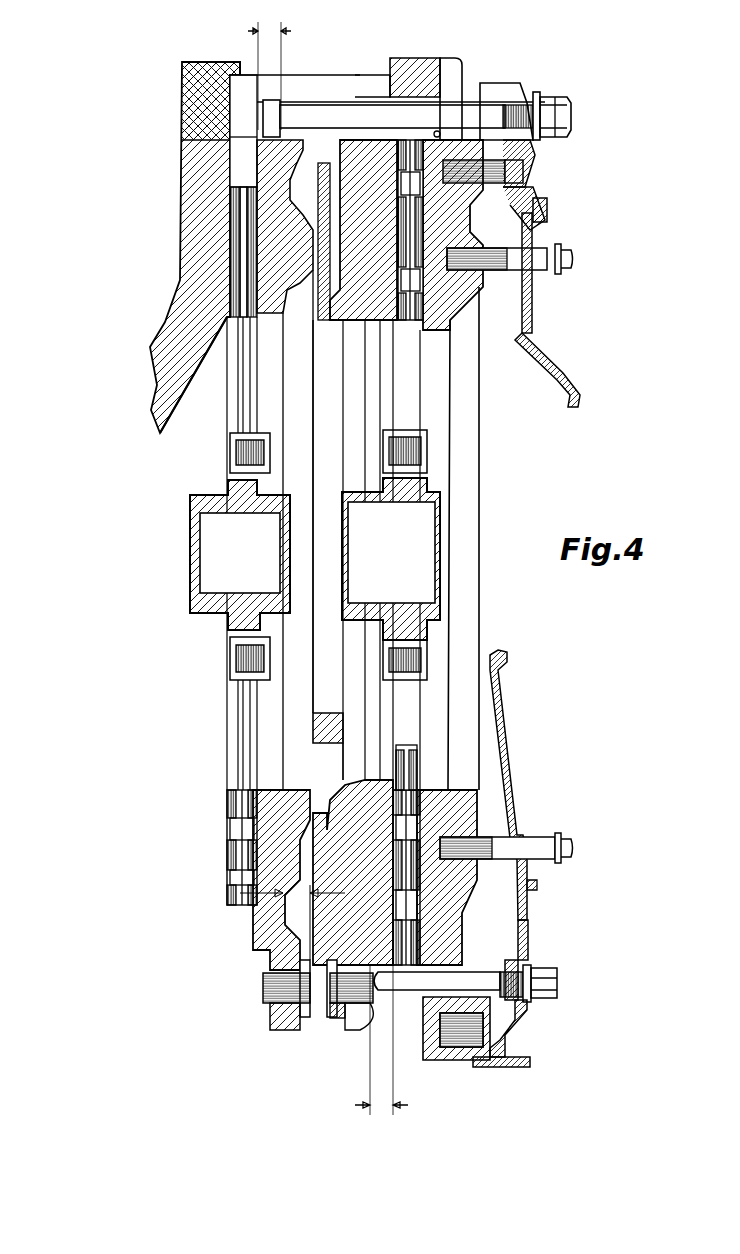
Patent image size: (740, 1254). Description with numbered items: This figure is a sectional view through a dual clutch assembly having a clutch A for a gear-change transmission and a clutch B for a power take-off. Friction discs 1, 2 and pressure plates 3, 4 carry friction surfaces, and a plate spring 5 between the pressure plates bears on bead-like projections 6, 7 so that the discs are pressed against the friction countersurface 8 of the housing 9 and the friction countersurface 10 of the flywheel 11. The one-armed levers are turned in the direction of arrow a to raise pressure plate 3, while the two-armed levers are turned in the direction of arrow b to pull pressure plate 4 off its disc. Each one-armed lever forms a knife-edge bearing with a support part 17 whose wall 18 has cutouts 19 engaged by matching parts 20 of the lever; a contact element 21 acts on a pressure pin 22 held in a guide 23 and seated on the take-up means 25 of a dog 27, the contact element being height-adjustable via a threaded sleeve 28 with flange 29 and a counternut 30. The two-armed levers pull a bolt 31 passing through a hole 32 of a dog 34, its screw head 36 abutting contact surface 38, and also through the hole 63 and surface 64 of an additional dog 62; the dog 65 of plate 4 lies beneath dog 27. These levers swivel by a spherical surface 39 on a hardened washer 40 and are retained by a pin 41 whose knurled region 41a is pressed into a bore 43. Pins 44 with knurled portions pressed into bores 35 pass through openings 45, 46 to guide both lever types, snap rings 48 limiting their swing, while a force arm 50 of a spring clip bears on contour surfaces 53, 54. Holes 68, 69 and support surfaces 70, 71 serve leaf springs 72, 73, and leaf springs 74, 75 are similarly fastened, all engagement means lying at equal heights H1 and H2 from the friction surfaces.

The friction disc 1 is at (480, 283).
The friction disc 2 is at (238, 246).
The pressure plate 3 is at (357, 255).
The pressure plate 4 is at (238, 173).
The plate spring 5 is at (240, 112).
The bead-like projection 6 is at (430, 134).
The bead-like projection 7 is at (306, 272).
The friction countersurface 8 is at (475, 330).
The housing 9 is at (540, 205).
The friction countersurface 10 is at (232, 200).
The flywheel 11 is at (177, 333).
The support part 17 is at (482, 1109).
The wall 18 is at (465, 1060).
The cutout 19 is at (497, 1062).
The counterprofiled matching part 20 is at (505, 1062).
The contact element 21 is at (558, 985).
The pressure pin 22 is at (515, 1012).
The guide 23 is at (482, 1005).
The take-up means 25 is at (345, 1010).
The dog 27 is at (365, 1025).
The threaded sleeve 28 is at (522, 1000).
The flange 29 is at (510, 965).
The counternut 30 is at (530, 998).
The bolt 31 is at (487, 110).
The hole 32 is at (323, 180).
The dog 34 is at (300, 92).
The bore 35 is at (530, 330).
The screw head 36 is at (262, 103).
The contact surface 38 is at (285, 100).
The spherical surface 39 is at (520, 152).
The hardened washer 40 is at (562, 120).
The pin 41 is at (503, 168).
The knurled region 41a is at (522, 195).
The bore 43 is at (538, 110).
The pin 44 is at (540, 262).
The opening 45 is at (522, 832).
The opening 46 is at (534, 292).
The snap ring 48 is at (572, 262).
The force arm 50 is at (535, 222).
The contour surface 53 is at (535, 905).
The contour surface 54 is at (545, 215).
The dog 62 is at (392, 62).
The hole 63 is at (365, 92).
The surface 64 is at (447, 92).
The dog 65 is at (275, 1028).
The hole 68 is at (272, 1020).
The hole 69 is at (340, 1008).
The support surface 70 is at (272, 978).
The support surface 71 is at (340, 972).
The leaf spring 72 is at (300, 968).
The leaf spring 73 is at (255, 937).
The leaf spring 74 is at (265, 992).
The leaf spring 75 is at (350, 1030).
The clutch A is at (418, 137).
The clutch B is at (228, 192).
The dimension H1 is at (309, 914).
The dimension H2 is at (328, 559).
The arrow a is at (479, 645).
The arrow b is at (510, 435).